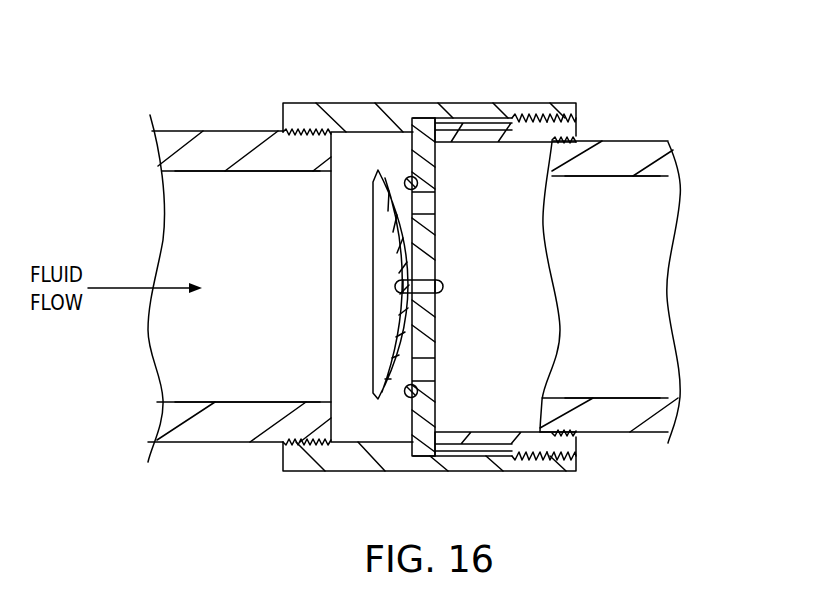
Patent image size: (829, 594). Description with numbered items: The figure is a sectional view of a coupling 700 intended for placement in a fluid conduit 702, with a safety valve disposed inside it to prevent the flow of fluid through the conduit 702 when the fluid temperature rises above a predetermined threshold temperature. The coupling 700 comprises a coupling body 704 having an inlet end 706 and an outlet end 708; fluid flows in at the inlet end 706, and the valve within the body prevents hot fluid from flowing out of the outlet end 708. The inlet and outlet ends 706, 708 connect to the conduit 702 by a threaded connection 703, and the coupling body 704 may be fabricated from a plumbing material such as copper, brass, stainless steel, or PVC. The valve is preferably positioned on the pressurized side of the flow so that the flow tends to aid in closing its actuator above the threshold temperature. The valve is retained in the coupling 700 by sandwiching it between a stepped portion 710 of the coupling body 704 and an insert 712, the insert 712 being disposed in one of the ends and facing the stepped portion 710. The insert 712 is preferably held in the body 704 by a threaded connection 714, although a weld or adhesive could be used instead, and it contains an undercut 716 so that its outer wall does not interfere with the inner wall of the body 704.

The coupling 700 is at (370, 66).
The fluid conduit 702 is at (237, 128).
The threaded connection 703 is at (310, 138).
The coupling body 704 is at (470, 116).
The inlet end 706 is at (262, 375).
The outlet end 708 is at (615, 375).
The stepped portion 710 is at (412, 117).
The insert 712 is at (477, 440).
The threaded connection 714 is at (552, 122).
The undercut 716 is at (512, 120).